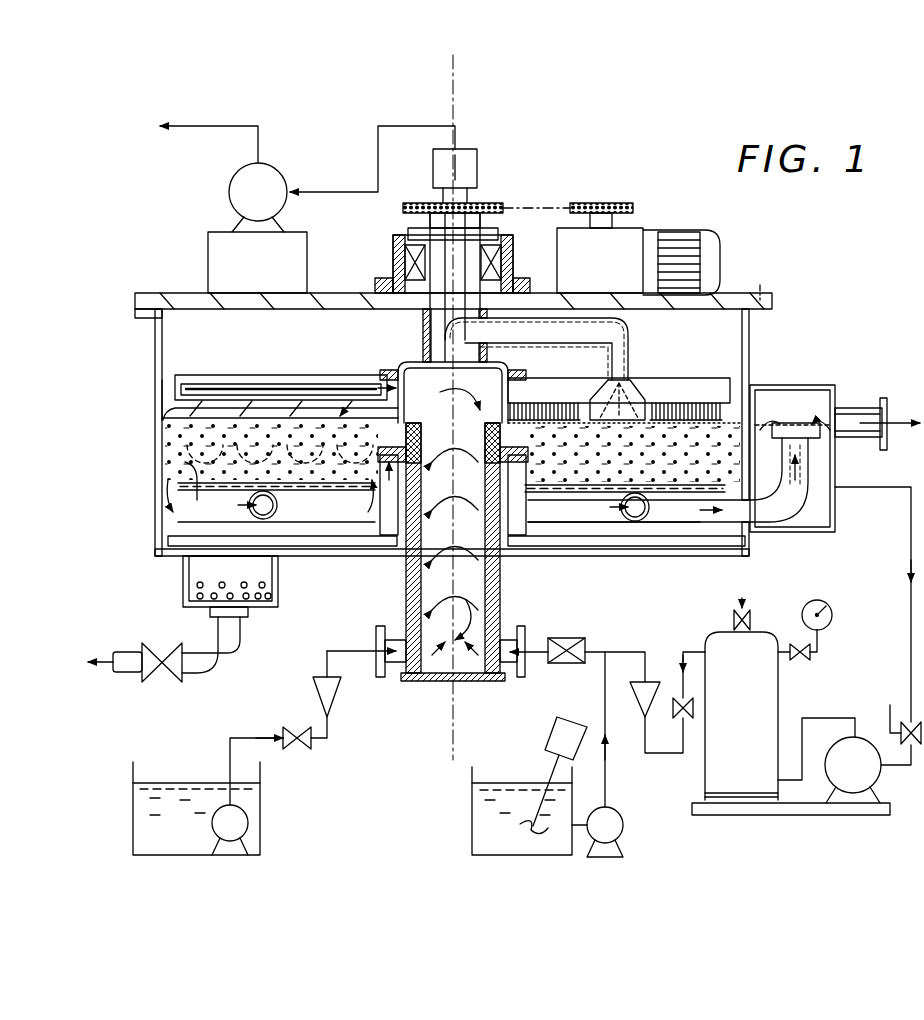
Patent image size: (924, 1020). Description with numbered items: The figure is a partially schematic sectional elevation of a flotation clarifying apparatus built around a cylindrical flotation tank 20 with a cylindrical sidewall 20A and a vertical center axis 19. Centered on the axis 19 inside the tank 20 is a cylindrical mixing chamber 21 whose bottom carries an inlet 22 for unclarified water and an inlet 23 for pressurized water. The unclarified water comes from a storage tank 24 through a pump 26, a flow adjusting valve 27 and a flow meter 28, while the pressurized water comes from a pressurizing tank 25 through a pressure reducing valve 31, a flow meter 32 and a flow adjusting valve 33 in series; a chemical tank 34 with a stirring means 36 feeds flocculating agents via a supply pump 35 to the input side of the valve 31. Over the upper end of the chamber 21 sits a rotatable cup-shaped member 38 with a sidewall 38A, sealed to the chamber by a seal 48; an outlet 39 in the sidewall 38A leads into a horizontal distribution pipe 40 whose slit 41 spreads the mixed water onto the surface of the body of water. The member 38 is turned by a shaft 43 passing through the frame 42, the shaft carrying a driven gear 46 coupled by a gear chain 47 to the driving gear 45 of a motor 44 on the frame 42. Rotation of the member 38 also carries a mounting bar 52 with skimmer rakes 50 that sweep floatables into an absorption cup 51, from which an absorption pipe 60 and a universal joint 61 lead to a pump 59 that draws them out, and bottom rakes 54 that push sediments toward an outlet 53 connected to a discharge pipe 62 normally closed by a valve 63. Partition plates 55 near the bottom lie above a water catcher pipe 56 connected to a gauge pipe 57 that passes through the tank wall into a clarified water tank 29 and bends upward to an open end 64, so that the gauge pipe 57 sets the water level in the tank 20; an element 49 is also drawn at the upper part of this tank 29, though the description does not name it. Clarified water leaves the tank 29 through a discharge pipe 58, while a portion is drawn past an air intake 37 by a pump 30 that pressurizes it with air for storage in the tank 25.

The center axis 19 is at (457, 66).
The flotation tank 20 is at (153, 361).
The cylindrical sidewall 20A is at (155, 391).
The mixing chamber 21 is at (446, 682).
The inlet 22 is at (393, 640).
The inlet 23 is at (501, 681).
The tank 24 is at (134, 808).
The pressurizing tank 25 is at (716, 640).
The pump 26 is at (249, 823).
The flow adjusting valve 27 is at (300, 752).
The flow meter 28 is at (340, 697).
The water tank 29 is at (833, 388).
The pump 30 is at (848, 791).
The pressure reducing valve 31 is at (565, 664).
The flow meter 32 is at (642, 716).
The flow adjusting valve 33 is at (684, 722).
The tank 34 is at (471, 796).
The supply pump 35 is at (624, 826).
The stirring means 36 is at (526, 830).
The air intake 37 is at (890, 712).
The cup-shaped member 38 is at (505, 362).
The cylindrical sidewall 38A is at (454, 396).
The outlet 39 is at (400, 372).
The distribution pipe 40 is at (228, 375).
The distribution slit 41 is at (186, 403).
The frame 42 is at (175, 303).
The rotatable shaft 43 is at (503, 282).
The motor 44 is at (642, 233).
The driving gear 45 is at (612, 204).
The driven gear 46 is at (404, 208).
The gear chain 47 is at (548, 211).
The seal 48 is at (528, 449).
The overflow pipe 49 is at (766, 422).
The skimmer rakes 50 is at (569, 403).
The absorption cup 51 is at (648, 382).
The mounting bar 52 is at (802, 386).
The outlet 53 is at (190, 576).
The rakes 54 is at (166, 546).
The partition plates 55 is at (185, 462).
The water catcher pipe 56 is at (280, 520).
The gauge pipe 57 is at (810, 463).
The discharge pipe 58 is at (874, 406).
The pump 59 is at (284, 168).
The absorption pipe 60 is at (619, 316).
The universal joint 61 is at (480, 168).
The discharge pipe 62 is at (205, 675).
The valve 63 is at (150, 683).
The open end 64 is at (830, 385).